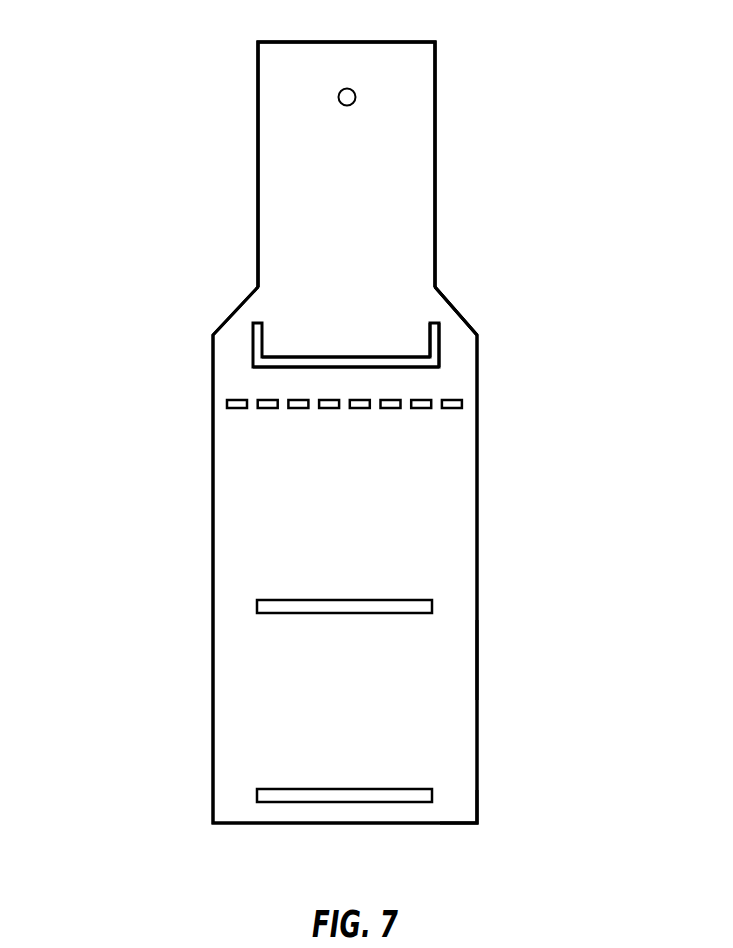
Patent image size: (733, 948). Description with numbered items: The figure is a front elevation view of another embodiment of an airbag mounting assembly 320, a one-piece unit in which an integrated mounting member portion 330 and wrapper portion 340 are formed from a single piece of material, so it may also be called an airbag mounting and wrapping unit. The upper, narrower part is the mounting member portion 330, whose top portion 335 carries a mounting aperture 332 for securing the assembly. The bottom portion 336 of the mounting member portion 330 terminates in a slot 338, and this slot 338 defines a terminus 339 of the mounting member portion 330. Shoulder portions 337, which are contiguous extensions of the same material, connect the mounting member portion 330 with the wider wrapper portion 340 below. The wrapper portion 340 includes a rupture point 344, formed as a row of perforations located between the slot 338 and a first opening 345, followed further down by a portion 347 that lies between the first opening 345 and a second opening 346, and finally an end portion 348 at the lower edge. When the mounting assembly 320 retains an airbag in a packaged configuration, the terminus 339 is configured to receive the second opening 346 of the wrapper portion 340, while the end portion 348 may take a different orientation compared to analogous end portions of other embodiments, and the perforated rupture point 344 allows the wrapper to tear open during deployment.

The airbag mounting assembly 320 is at (569, 113).
The mounting member portion 330 is at (236, 48).
The mounting aperture 332 is at (355, 95).
The top portion 335 is at (283, 95).
The bottom portion 336 is at (374, 339).
The shoulder portions 337 is at (430, 300).
The slot 338 is at (400, 367).
The terminus 339 is at (410, 357).
The wrapper portion 340 is at (156, 444).
The rupture point 344 is at (390, 410).
The first opening 345 is at (282, 614).
The second opening 346 is at (290, 788).
The portion 347 is at (435, 653).
The end portion 348 is at (453, 803).